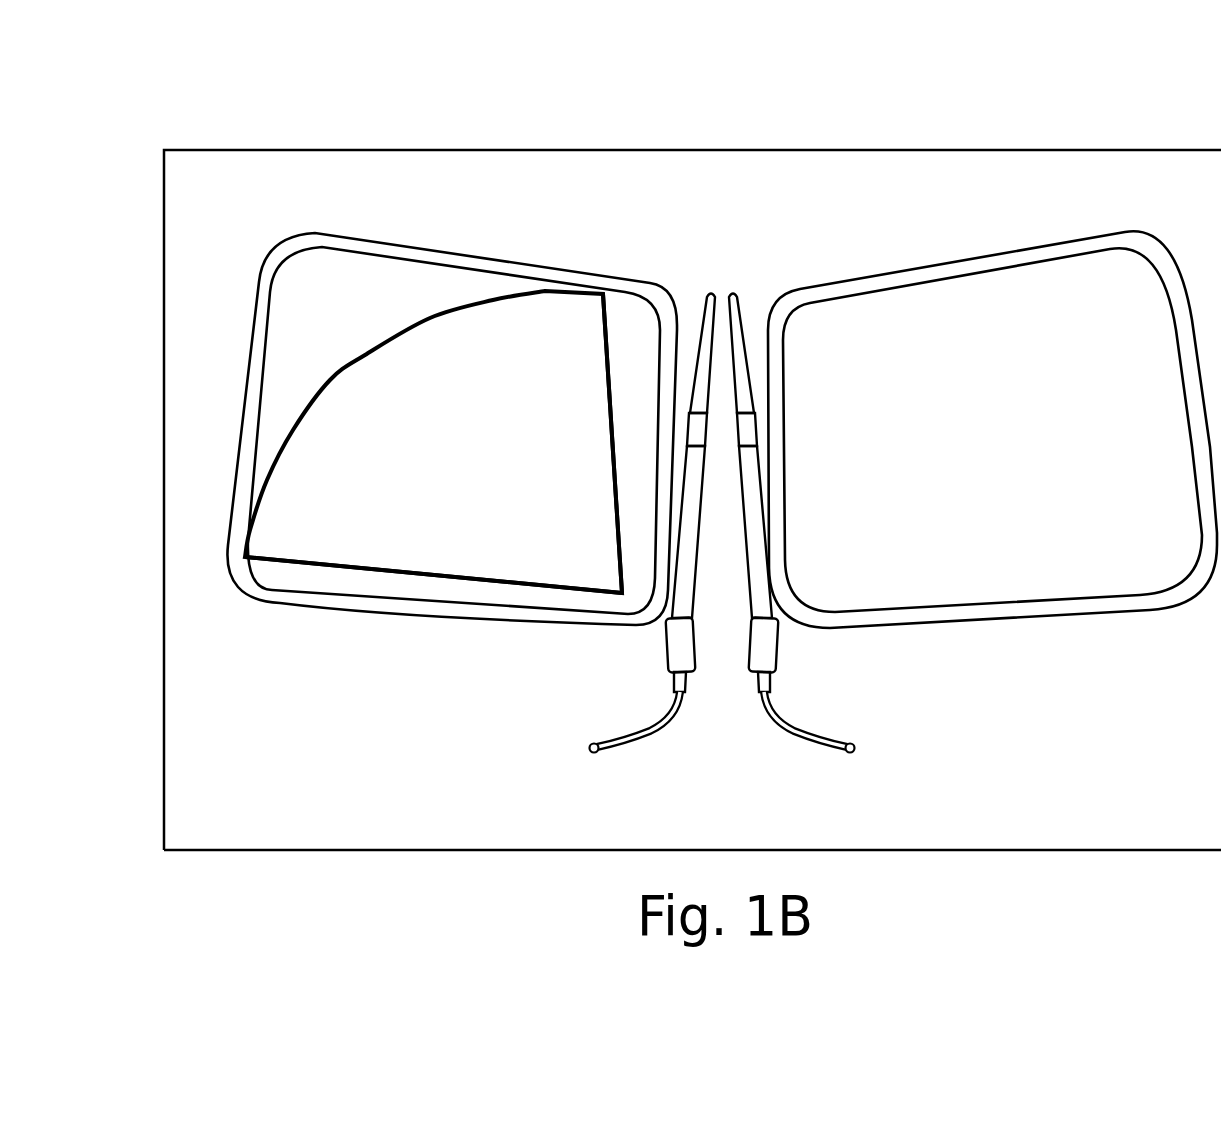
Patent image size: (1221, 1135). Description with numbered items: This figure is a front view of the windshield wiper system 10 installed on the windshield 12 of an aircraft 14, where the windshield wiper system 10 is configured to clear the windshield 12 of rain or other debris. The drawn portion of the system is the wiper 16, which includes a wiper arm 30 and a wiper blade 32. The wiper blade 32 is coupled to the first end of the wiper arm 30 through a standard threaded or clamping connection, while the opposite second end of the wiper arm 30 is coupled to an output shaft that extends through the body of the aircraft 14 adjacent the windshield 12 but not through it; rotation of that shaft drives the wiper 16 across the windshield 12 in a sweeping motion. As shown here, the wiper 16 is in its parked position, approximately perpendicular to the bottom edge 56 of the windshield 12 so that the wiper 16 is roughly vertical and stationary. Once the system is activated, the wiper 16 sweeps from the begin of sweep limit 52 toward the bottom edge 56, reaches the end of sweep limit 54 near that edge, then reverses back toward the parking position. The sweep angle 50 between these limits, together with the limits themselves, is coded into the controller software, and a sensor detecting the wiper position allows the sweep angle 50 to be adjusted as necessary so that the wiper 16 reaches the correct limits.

The windshield wiper system 10 is at (987, 125).
The windshield 12 is at (1050, 322).
The aircraft 14 is at (1002, 672).
The wiper 16 is at (701, 655).
The wiper arm 30 is at (646, 737).
The wiper blade 32 is at (745, 313).
The sweep angle 50 is at (358, 358).
The begin of sweep limit 52 is at (614, 358).
The end of sweep limit 54 is at (420, 578).
The bottom edge 56 is at (319, 613).